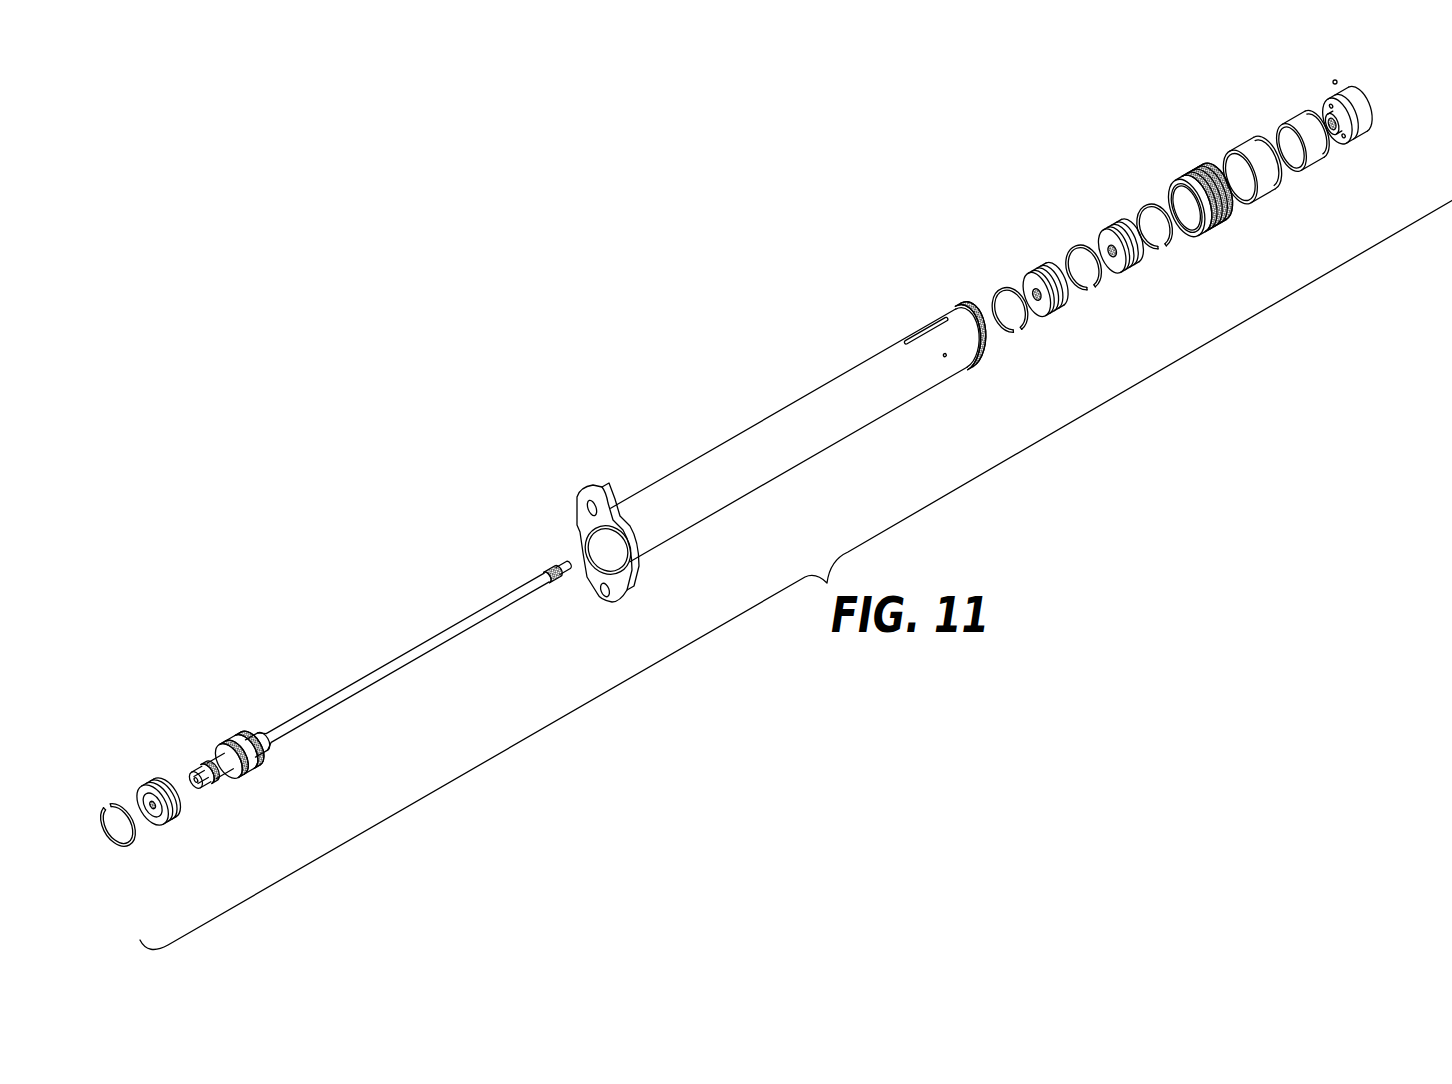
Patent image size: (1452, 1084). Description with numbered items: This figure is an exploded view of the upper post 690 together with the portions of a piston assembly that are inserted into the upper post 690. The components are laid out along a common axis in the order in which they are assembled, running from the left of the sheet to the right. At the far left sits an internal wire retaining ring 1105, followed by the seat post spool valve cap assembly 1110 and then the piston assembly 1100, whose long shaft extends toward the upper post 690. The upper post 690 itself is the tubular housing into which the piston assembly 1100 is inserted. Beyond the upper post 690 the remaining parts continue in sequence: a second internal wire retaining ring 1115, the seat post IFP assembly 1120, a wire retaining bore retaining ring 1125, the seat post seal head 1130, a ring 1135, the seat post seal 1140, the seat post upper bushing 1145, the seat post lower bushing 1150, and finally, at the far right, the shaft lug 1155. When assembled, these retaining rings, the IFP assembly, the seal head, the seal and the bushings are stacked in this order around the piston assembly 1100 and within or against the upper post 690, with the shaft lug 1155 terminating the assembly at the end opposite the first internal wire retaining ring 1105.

The upper post 690 is at (970, 367).
The piston assembly 1100 is at (396, 670).
The internal wire retaining ring 1105 is at (128, 848).
The seat post spool valve cap assembly 1110 is at (175, 818).
The internal wire retaining ring 1115 is at (1003, 290).
The seat post IFP assembly 1120 is at (1042, 262).
The wire retaining bore retaining ring 1125 is at (1077, 243).
The seat post seal head 1130 is at (1113, 220).
The ring 1135 is at (1148, 197).
The seat post seal 1140 is at (1187, 163).
The seat post upper bushing 1145 is at (1243, 140).
The seat post lower bushing 1150 is at (1293, 110).
The shaft lug 1155 is at (1340, 83).